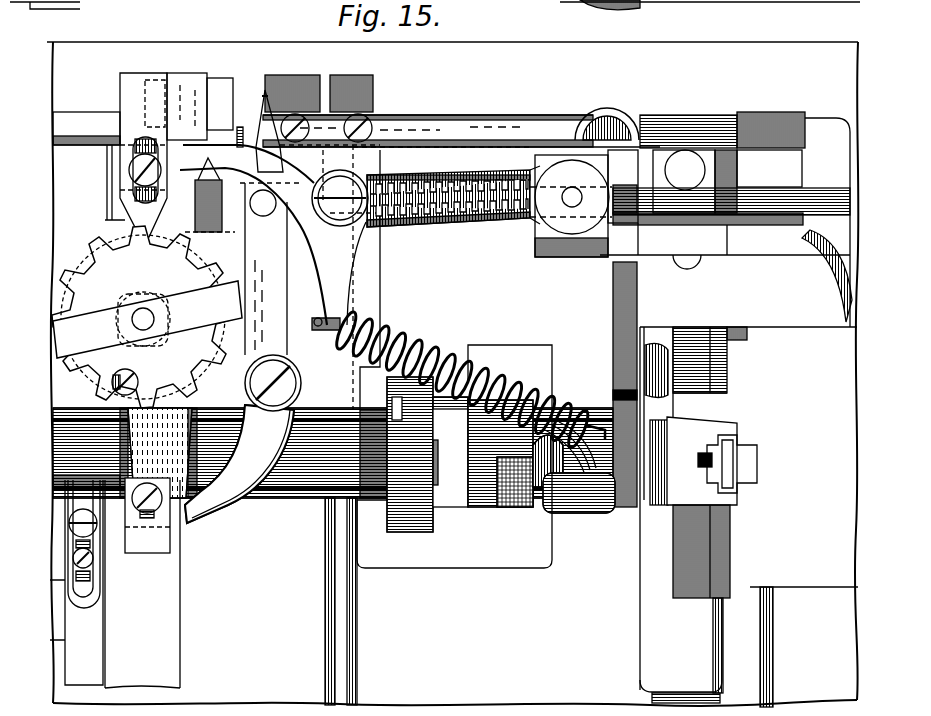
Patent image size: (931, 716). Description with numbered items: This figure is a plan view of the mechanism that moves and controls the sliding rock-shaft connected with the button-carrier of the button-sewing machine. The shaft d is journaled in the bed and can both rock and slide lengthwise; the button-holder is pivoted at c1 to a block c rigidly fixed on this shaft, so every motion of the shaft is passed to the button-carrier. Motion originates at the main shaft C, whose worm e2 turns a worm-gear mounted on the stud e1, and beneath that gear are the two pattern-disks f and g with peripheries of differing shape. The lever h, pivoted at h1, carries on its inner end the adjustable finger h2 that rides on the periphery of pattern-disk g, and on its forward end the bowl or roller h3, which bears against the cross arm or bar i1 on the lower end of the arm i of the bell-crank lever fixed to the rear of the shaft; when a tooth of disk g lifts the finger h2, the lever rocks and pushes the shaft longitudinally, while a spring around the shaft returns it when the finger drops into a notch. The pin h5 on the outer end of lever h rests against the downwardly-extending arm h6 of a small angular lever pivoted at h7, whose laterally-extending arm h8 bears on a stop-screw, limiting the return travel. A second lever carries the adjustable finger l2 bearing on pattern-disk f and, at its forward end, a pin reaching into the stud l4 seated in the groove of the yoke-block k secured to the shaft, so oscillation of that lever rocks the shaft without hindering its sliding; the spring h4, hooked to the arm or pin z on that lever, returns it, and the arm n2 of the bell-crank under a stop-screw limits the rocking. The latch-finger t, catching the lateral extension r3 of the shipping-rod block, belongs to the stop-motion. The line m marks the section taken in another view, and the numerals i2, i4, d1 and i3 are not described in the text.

The section line m is at (452, 374).
The adjustable finger l2 is at (138, 82).
The arm of bell-crank lever n2 is at (217, 90).
The pivot of angular lever h7 is at (300, 75).
The laterally-extending arm h8 is at (355, 90).
The pin or finger h5 is at (262, 108).
The downwardly-extending arm h6 is at (263, 92).
The pin i2 is at (246, 134).
The bowl or roller h3 is at (263, 203).
The pattern-disk f is at (212, 233).
The lever h is at (273, 334).
The cross arm or bar i1 is at (340, 198).
The arm of bell-crank lever i is at (458, 230).
The bar pin i4 is at (432, 152).
The bar part d1 is at (492, 154).
The eye i3 is at (572, 197).
The yoke-block k is at (535, 237).
The stud l4 is at (623, 202).
The block c is at (625, 226).
The pivot c1 is at (757, 187).
The shaft d is at (769, 170).
The pattern-disk g is at (143, 317).
The stud e1 is at (148, 292).
The shaft C is at (287, 522).
The worm e2 is at (192, 408).
The pivot h1 is at (303, 383).
The spring h4 is at (440, 345).
The arm or pin z is at (345, 272).
The latch-finger t is at (76, 582).
The lateral extension r3 is at (66, 614).
The adjustable finger h2 is at (150, 553).